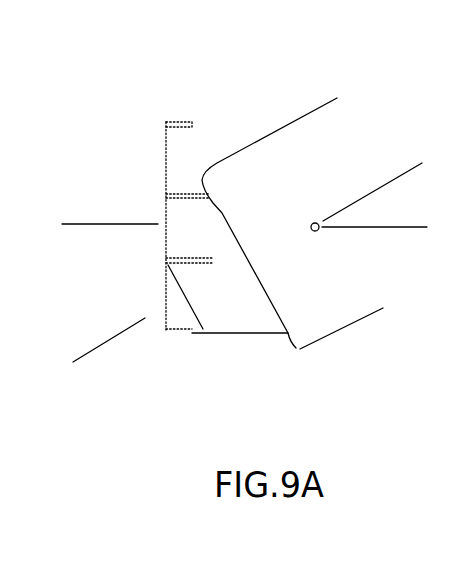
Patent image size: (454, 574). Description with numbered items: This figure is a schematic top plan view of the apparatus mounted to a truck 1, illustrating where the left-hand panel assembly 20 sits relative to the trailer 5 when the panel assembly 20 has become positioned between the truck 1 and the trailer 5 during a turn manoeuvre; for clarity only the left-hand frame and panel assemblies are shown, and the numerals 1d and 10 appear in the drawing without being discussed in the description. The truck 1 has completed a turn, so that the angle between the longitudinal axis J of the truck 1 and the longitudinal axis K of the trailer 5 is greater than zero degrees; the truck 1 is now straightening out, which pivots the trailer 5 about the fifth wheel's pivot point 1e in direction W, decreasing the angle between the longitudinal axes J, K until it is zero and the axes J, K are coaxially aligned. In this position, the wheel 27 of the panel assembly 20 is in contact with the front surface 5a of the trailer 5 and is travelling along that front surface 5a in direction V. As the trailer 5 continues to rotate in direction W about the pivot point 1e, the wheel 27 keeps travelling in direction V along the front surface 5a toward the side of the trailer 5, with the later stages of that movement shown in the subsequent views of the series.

The truck 1 is at (131, 187).
The optical element edge 1d is at (167, 152).
The fifth wheel's pivot point 1e is at (312, 223).
The trailer 5 is at (313, 130).
The front surface 5a is at (218, 215).
The optical element (tilted position) 10 is at (186, 244).
The panel assembly 20 is at (233, 342).
The wheel 27 is at (289, 338).
The longitudinal axis of the truck J is at (46, 169).
The longitudinal axis of the trailer K is at (108, 342).
The direction W is at (288, 221).
The direction V is at (317, 357).